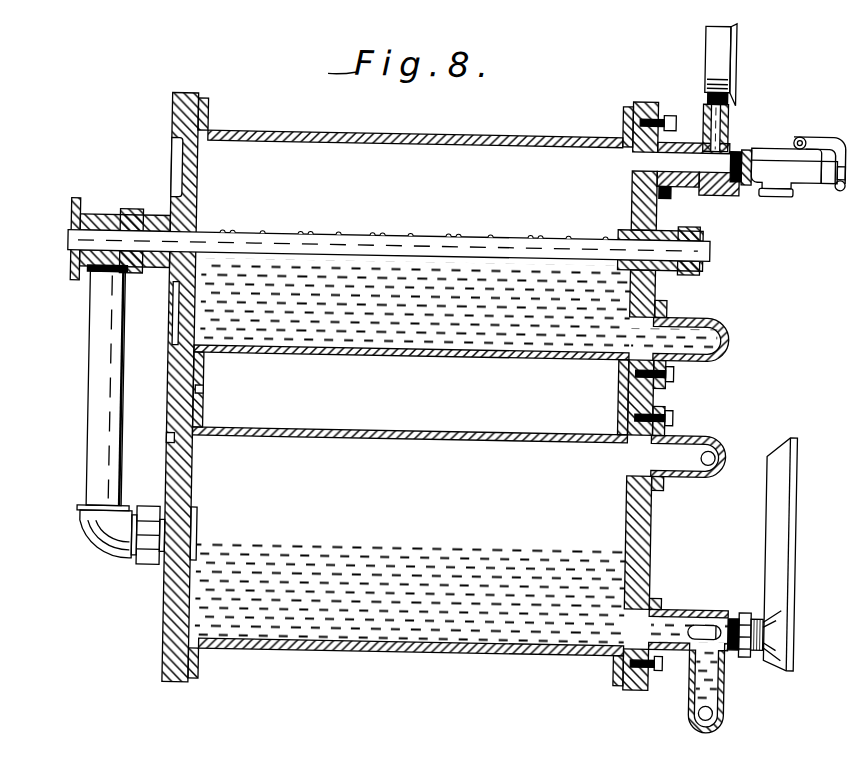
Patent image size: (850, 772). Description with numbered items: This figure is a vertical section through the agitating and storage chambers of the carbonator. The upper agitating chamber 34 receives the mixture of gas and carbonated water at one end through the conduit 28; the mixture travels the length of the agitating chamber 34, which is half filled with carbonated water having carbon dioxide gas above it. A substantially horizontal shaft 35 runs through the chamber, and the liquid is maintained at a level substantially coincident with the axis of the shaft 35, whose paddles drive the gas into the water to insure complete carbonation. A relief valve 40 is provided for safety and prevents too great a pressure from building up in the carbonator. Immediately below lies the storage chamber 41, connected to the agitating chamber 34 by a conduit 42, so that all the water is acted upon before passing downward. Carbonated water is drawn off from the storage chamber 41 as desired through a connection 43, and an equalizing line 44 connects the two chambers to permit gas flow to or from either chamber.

The agitating chamber 34 is at (416, 241).
The horizontal shaft 35 is at (319, 240).
The storage chamber 41 is at (411, 553).
The conduit 42 is at (106, 418).
The conduit 28 is at (729, 328).
The equalizing line 44 is at (727, 452).
The connection 43 is at (723, 706).
The relief valve 40 is at (781, 144).